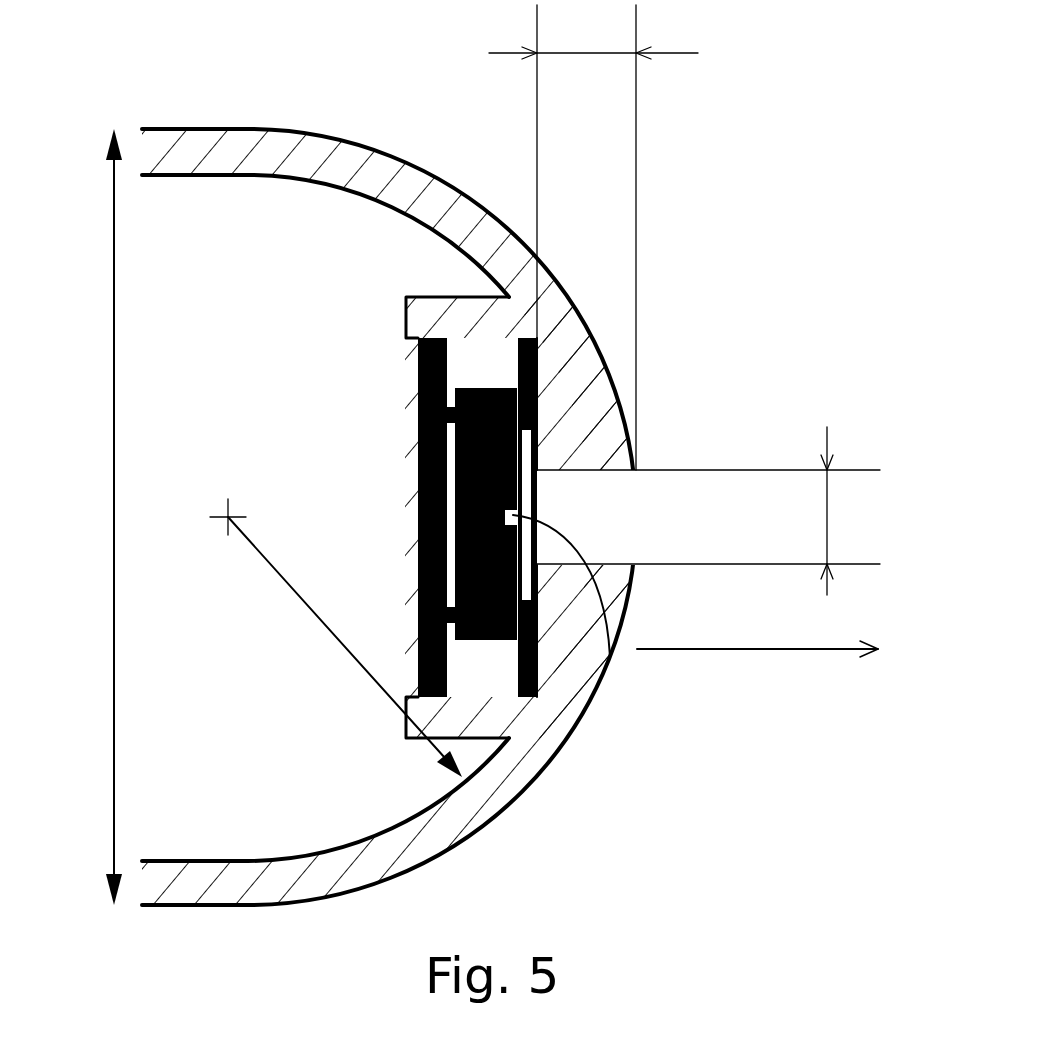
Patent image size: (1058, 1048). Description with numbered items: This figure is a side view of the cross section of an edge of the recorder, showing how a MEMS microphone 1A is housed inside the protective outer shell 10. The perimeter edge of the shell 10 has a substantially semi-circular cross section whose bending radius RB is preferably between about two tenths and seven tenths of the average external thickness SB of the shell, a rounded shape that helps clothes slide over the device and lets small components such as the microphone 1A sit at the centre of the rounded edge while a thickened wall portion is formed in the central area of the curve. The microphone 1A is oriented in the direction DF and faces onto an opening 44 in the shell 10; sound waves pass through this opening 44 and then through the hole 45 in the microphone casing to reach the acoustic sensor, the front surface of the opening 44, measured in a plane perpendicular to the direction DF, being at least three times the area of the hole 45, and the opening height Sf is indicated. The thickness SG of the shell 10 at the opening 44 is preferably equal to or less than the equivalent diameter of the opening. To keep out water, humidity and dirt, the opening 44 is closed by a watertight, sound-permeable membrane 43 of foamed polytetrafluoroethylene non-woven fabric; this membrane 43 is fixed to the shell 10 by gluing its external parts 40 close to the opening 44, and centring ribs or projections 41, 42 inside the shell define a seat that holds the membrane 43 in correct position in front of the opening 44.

The protective outer shell 10 is at (500, 237).
The external parts 40 is at (540, 376).
The centring rib 41 is at (406, 318).
The centring rib 42 is at (425, 715).
The membrane 43 is at (612, 660).
The opening 44 is at (585, 517).
The hole 45 is at (530, 578).
The microphone 1A is at (475, 388).
The thickness of the shell at the opening SG is at (593, 237).
The window height Sf is at (843, 511).
The direction of microphone orientation DF is at (770, 649).
The average external thickness of the shell SB is at (116, 303).
The ball radius RB is at (278, 578).